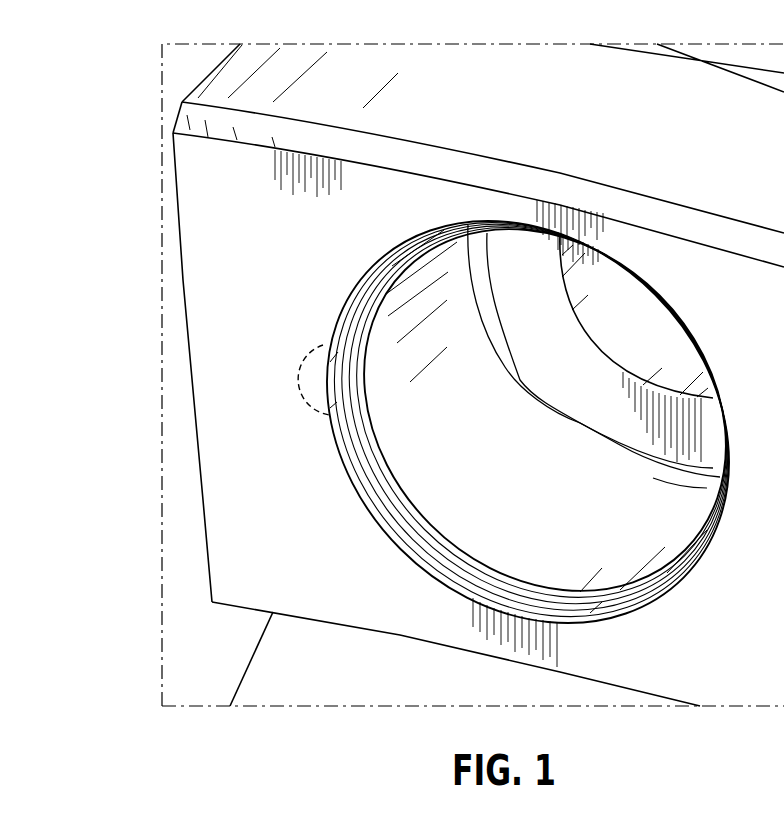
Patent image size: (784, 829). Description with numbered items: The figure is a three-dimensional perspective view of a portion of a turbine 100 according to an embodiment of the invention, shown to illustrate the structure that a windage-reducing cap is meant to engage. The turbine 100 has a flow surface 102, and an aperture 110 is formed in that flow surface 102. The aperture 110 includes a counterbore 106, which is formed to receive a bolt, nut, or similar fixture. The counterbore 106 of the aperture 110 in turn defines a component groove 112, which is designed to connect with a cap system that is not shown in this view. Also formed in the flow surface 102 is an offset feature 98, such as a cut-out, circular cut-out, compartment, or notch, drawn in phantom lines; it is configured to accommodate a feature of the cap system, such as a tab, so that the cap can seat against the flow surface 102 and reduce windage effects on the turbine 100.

The offset feature 98 is at (322, 345).
The turbine 100 is at (137, 111).
The flow surface 102 is at (265, 213).
The counterbore 106 is at (455, 412).
The aperture 110 is at (508, 468).
The component groove 112 is at (562, 608).